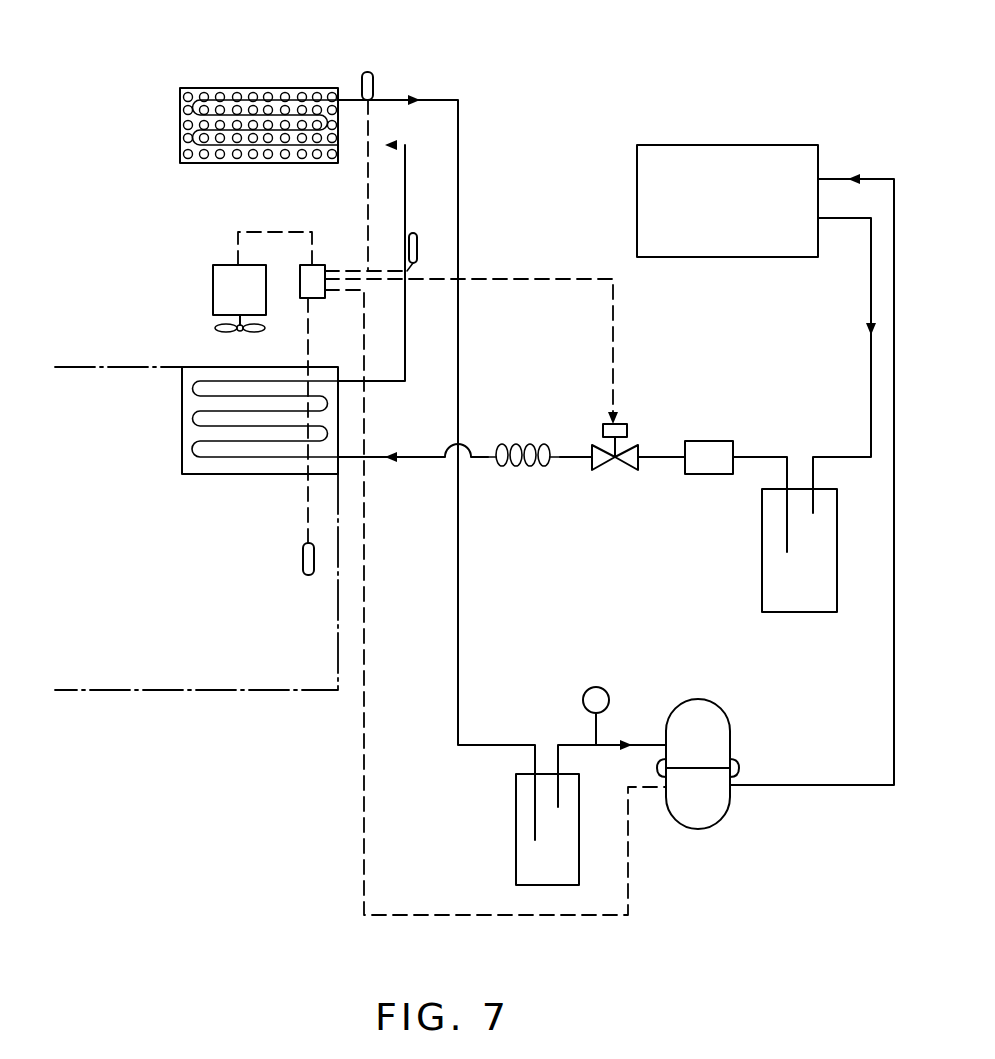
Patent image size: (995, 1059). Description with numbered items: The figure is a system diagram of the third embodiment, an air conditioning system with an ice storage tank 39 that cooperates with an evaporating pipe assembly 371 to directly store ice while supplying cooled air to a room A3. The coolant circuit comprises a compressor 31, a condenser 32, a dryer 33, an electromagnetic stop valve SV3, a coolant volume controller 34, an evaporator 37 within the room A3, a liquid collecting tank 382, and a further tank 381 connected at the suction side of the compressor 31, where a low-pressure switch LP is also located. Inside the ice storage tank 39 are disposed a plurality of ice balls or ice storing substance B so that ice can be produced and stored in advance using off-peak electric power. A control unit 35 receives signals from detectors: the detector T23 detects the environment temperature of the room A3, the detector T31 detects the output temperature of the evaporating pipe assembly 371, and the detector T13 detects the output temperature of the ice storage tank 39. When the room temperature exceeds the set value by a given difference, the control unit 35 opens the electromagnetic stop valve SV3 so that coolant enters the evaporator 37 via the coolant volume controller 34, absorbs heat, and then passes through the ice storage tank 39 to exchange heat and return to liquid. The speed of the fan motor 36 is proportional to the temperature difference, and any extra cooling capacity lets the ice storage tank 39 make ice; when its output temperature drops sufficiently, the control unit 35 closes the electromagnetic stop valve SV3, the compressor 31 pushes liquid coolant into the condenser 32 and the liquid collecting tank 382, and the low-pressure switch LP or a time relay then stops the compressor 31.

The compressor 31 is at (710, 829).
The condenser 32 is at (738, 145).
The dryer 33 is at (710, 441).
The coolant volume controller 34 is at (523, 440).
The control unit 35 is at (313, 265).
The fan motor 36 is at (213, 287).
The evaporator 37 is at (213, 474).
The evaporating pipe assembly 371 is at (182, 414).
The accumulator 381 is at (516, 829).
The liquid collecting tank 382 is at (798, 612).
The ice storage tank 39 is at (250, 88).
The ice storing substance B is at (185, 113).
The room A3 is at (196, 528).
The detector T13 is at (373, 76).
The detector T31 is at (415, 233).
The detector T23 is at (302, 568).
The electromagnetic stop valve SV3 is at (610, 466).
The low-pressure switch LP is at (592, 682).